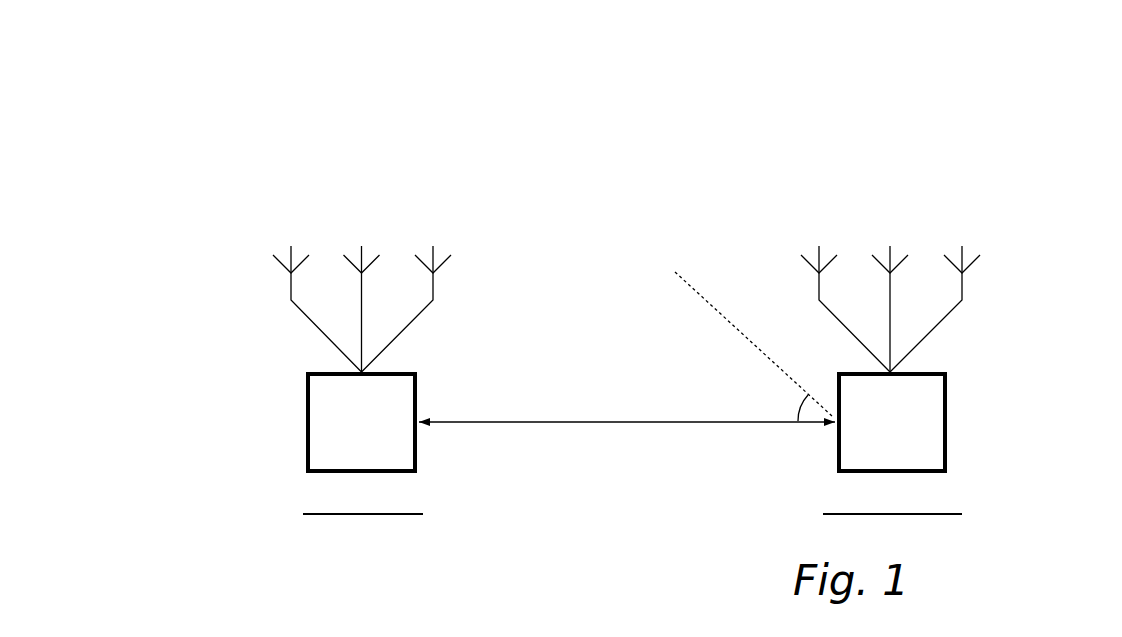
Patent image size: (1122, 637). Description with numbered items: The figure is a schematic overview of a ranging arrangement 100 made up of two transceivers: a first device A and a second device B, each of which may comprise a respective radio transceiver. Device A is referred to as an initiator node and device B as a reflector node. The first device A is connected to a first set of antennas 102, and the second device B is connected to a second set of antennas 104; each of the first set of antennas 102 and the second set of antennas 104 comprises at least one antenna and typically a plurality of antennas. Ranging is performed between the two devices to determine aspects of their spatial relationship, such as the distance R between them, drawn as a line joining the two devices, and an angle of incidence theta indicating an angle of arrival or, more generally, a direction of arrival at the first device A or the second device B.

The ranging arrangement 100 is at (942, 96).
The first set of antennas 102 is at (250, 247).
The second set of antennas 104 is at (1003, 247).